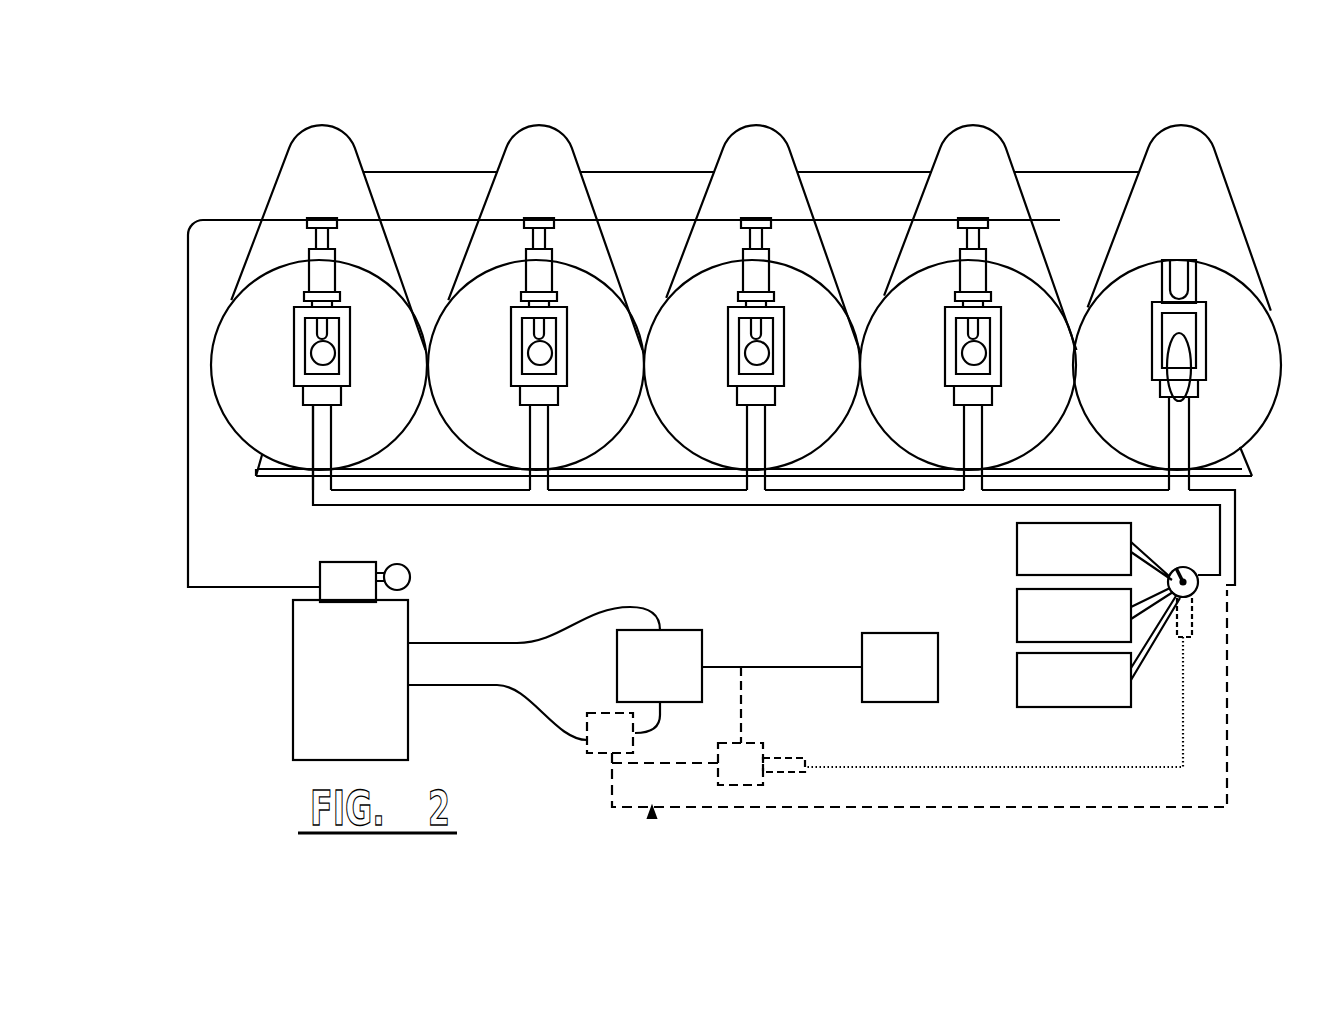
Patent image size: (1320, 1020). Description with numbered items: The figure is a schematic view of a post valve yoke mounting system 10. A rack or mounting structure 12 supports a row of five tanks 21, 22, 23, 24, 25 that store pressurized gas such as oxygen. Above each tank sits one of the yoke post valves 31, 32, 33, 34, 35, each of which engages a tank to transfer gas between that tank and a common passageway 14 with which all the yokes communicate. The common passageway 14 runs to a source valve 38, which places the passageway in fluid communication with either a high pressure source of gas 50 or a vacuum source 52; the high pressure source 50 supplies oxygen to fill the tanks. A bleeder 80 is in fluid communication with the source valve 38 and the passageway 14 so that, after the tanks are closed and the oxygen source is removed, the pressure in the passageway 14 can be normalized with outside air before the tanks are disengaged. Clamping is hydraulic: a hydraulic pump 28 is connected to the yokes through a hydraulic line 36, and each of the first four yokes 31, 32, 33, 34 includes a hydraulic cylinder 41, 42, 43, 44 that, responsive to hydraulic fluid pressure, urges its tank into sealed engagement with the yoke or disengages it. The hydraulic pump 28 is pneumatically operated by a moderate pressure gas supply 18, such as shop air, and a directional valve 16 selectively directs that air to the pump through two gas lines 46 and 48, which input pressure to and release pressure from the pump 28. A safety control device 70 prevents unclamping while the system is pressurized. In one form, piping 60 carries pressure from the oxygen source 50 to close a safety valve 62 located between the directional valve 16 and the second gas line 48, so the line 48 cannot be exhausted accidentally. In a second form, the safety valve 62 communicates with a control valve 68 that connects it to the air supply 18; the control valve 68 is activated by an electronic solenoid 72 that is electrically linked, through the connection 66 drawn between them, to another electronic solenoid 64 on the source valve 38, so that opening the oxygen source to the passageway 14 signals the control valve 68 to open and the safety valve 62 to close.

The post valve yoke mounting system 10 is at (1104, 103).
The rack or mounting structure 12 is at (279, 478).
The common passageway 14 is at (513, 506).
The directional valve 16 is at (688, 630).
The gas supply 18 is at (893, 633).
The tank 21 is at (336, 122).
The tank 22 is at (566, 133).
The tank 23 is at (777, 129).
The tank 24 is at (1008, 157).
The tank 25 is at (1203, 137).
The hydraulic pump 28 is at (410, 628).
The yoke post valve 31 is at (298, 398).
The yoke post valve 32 is at (507, 398).
The yoke post valve 33 is at (724, 398).
The yoke post valve 34 is at (942, 398).
The yoke post valve 35 is at (1149, 375).
The hydraulic line 36 is at (258, 590).
The source valve 38 is at (1182, 567).
The hydraulic cylinder 41 is at (372, 262).
The hydraulic cylinder 42 is at (593, 262).
The hydraulic cylinder 43 is at (802, 262).
The hydraulic cylinder 44 is at (1024, 262).
The first gas line 46 is at (507, 643).
The second gas line 48 is at (497, 687).
The high pressure source of gas 50 is at (1017, 546).
The vacuum source 52 is at (1017, 600).
The piping 60 is at (612, 793).
The safety valve 62 is at (587, 750).
The electronic solenoid 64 is at (1190, 637).
The signal line 66 is at (998, 767).
The control valve 68 is at (752, 743).
The safety control device 70 is at (652, 815).
The electronic solenoid 72 is at (783, 758).
The bleeder 80 is at (1017, 666).